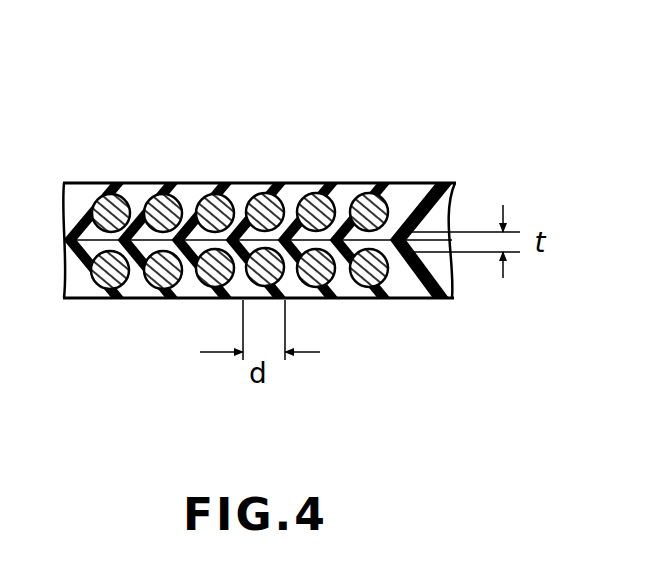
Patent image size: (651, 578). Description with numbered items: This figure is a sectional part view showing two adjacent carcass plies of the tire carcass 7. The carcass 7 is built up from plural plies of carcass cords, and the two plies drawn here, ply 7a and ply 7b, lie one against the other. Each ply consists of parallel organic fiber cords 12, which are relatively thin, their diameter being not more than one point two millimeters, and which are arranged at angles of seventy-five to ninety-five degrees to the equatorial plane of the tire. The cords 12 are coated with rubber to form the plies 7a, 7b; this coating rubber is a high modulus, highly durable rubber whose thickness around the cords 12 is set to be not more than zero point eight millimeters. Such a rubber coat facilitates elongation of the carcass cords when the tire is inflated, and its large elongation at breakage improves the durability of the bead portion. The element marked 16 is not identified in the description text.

The carcass 7 is at (173, 158).
The carcass ply 7a is at (205, 183).
The carcass ply 7b is at (183, 305).
The cords 12 is at (315, 178).
The chevron reinforcing strips 16 is at (357, 186).